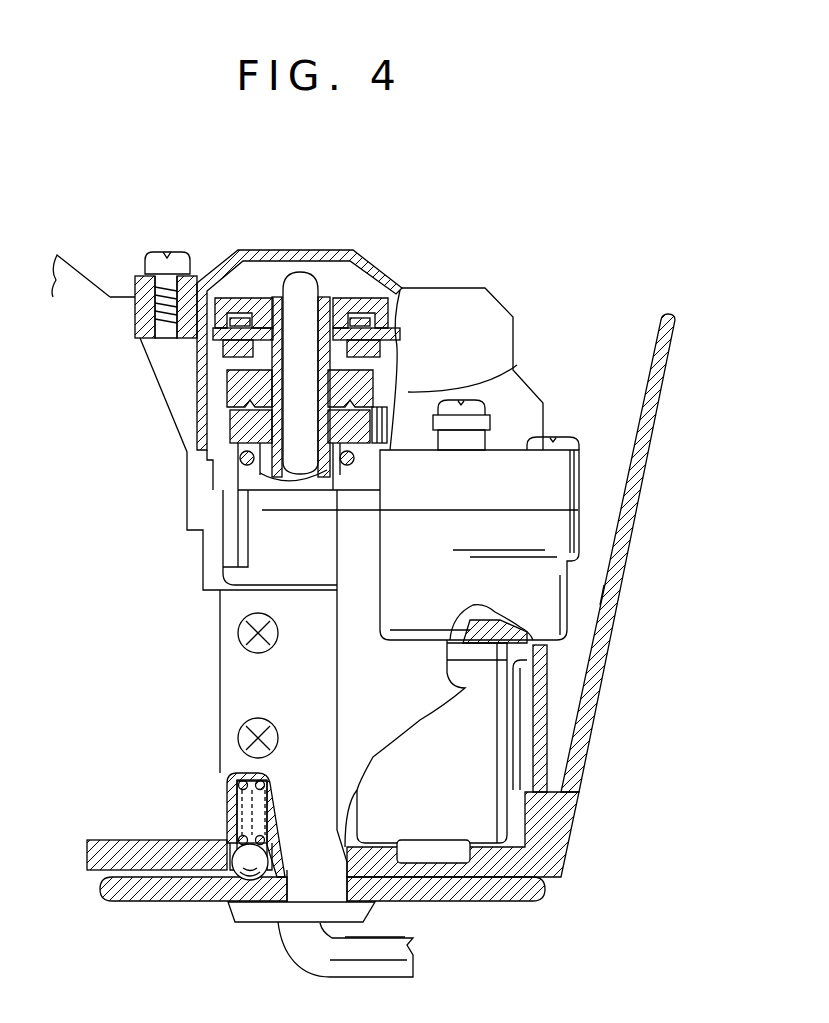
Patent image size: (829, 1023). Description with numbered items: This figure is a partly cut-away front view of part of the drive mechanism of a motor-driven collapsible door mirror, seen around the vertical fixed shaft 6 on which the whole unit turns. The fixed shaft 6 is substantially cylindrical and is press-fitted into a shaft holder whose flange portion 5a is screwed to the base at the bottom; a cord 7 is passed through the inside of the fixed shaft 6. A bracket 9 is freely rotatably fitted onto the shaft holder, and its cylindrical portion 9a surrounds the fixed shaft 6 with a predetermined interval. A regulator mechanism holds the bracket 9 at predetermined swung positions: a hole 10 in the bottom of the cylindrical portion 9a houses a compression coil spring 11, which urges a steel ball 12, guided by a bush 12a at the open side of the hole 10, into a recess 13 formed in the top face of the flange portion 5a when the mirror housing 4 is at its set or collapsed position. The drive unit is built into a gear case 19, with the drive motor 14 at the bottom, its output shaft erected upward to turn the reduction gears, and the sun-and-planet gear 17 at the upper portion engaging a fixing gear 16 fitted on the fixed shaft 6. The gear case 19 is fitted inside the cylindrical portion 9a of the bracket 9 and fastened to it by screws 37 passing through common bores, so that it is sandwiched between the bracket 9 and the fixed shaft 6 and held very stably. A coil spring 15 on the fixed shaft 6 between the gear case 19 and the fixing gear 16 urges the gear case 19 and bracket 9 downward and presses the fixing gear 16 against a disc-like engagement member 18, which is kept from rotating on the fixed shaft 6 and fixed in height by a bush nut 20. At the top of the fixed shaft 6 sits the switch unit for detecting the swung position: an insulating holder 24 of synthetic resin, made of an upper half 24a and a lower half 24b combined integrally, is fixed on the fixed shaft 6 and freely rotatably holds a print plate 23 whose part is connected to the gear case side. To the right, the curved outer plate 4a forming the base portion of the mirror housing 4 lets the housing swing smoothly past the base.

The mirror housing 4 is at (650, 433).
The outer plate 4a is at (608, 597).
The flange portion 5a is at (518, 897).
The fixed shaft 6 is at (262, 493).
The cord 7 is at (303, 285).
The bracket 9 is at (82, 292).
The cylindrical portion 9a is at (228, 753).
The hole 10 is at (235, 817).
The compression coil spring 11 is at (240, 797).
The steel ball 12 is at (243, 853).
The bush 12a is at (198, 873).
The recess 13 is at (227, 903).
The drive motor 14 is at (490, 807).
The coil spring 15 is at (258, 447).
The fixing gear 16 is at (207, 427).
The sun-and-planet gear 17 is at (517, 365).
The engagement member 18 is at (230, 395).
The gear case 19 is at (548, 600).
The bush nut 20 is at (400, 363).
The print plate 23 is at (222, 305).
The holder 24 is at (363, 310).
The upper half 24a is at (248, 297).
The lower half 24b is at (403, 360).
The screws 37 is at (238, 640).